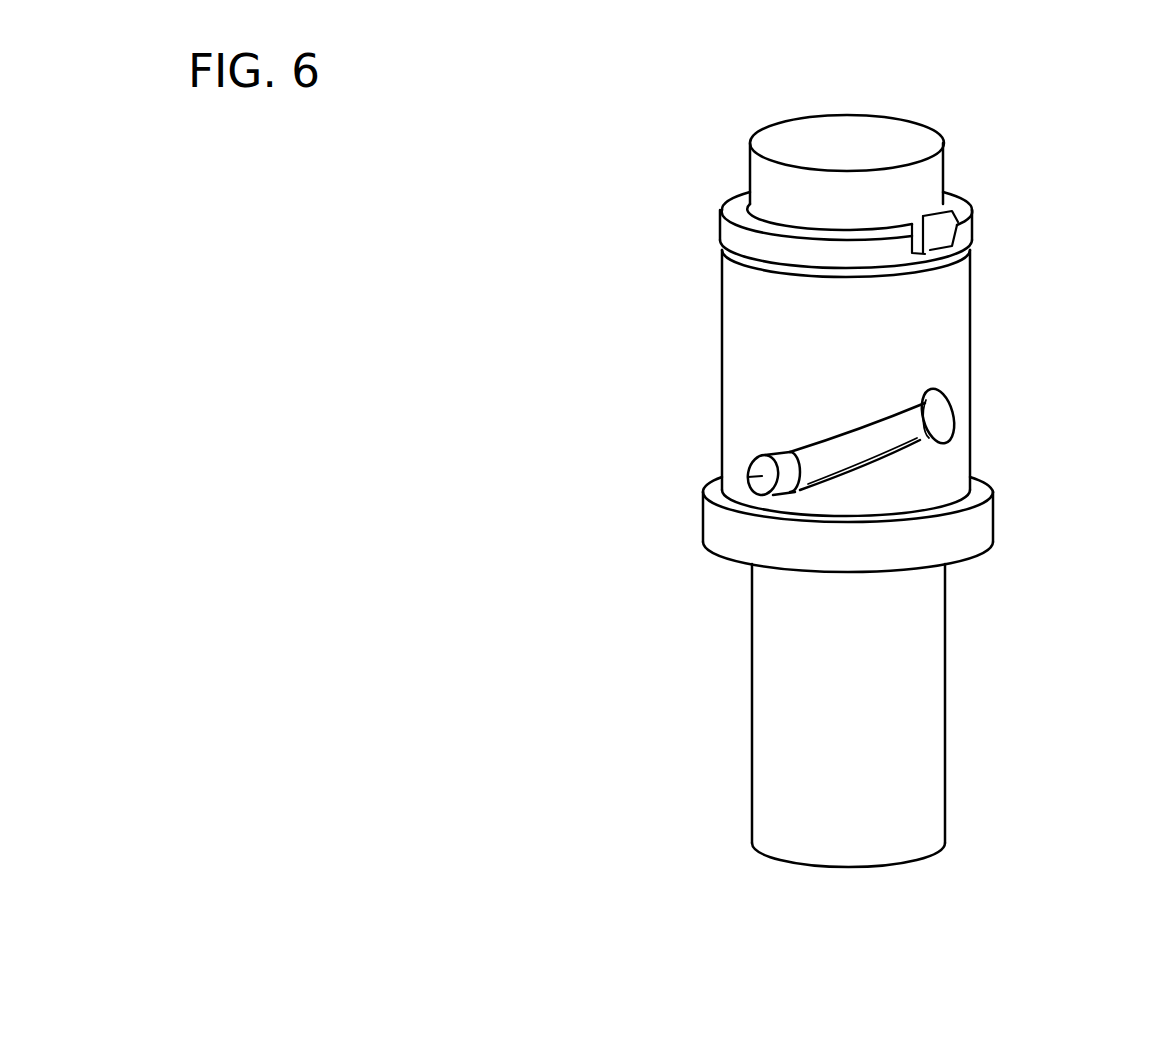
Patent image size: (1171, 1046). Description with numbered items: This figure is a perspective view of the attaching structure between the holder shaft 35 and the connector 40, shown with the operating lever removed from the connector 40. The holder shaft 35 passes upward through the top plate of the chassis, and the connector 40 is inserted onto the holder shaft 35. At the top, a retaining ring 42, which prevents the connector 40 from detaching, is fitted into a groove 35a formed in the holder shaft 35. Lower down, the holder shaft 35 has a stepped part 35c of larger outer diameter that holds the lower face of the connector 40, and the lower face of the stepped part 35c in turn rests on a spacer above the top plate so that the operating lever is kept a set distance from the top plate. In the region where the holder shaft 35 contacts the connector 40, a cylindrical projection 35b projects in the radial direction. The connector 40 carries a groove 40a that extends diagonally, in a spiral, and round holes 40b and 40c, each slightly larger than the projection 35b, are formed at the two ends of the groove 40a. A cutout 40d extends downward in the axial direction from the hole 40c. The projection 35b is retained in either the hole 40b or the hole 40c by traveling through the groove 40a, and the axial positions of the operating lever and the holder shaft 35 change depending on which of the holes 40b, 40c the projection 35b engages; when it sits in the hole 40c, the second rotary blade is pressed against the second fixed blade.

The retaining ring 42 is at (738, 208).
The connector 40 is at (753, 337).
The groove 40a is at (875, 477).
The round hole 40b is at (940, 421).
The round hole 40c is at (748, 447).
The cutout 40d is at (753, 498).
The holder shaft 35 is at (817, 715).
The groove 35a is at (923, 255).
The cylindrical projection 35b is at (748, 477).
The stepped part 35c is at (953, 535).